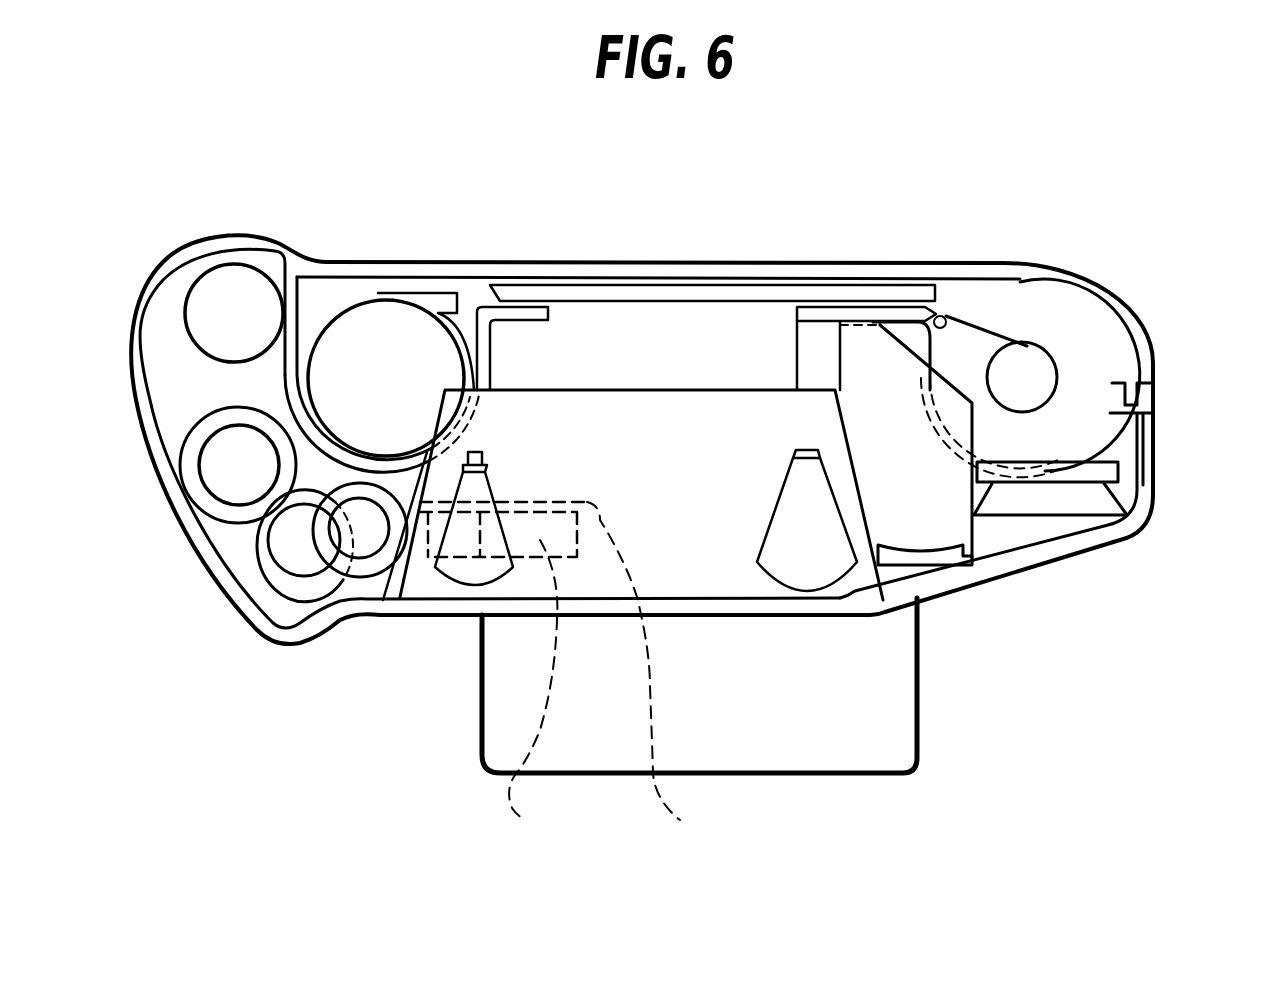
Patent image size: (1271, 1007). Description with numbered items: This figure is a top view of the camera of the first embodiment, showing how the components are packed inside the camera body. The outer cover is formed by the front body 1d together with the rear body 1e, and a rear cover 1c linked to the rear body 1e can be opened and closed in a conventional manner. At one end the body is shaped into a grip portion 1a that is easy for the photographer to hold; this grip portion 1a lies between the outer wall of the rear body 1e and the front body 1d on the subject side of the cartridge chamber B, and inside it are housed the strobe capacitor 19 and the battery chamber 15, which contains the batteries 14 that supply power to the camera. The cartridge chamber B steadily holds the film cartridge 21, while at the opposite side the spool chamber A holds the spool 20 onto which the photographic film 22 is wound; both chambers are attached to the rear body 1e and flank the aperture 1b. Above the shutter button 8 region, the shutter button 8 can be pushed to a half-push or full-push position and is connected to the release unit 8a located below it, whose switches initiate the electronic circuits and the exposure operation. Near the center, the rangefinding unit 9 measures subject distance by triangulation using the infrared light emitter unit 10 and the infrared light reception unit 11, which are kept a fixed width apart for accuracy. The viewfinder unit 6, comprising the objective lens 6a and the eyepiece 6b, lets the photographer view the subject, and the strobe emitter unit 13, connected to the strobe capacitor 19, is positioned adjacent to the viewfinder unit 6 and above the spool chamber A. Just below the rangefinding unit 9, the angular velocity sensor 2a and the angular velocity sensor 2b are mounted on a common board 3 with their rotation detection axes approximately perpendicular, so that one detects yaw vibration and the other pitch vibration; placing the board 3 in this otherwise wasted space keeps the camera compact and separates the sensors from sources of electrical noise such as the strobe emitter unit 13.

The grip portion 1a is at (257, 241).
The aperture 1b is at (710, 327).
The rear cover 1c is at (1093, 293).
The front body 1d is at (1117, 530).
The rear body 1e is at (513, 287).
The angular velocity sensor 2a is at (438, 524).
The angular velocity sensor 2b is at (537, 696).
The board 3 is at (699, 677).
The viewfinder unit 6 is at (822, 328).
The objective lens 6a is at (935, 560).
The eyepiece 6b is at (922, 300).
The shutter button 8 is at (365, 530).
The release unit 8a is at (302, 578).
The rangefinding unit 9 is at (646, 410).
The infrared light emitter unit 10 is at (818, 572).
The infrared light reception unit 11 is at (460, 568).
The strobe emitter unit 13 is at (1103, 472).
The batteries 14 is at (227, 472).
The battery chamber 15 is at (208, 556).
The strobe capacitor 19 is at (220, 300).
The spool 20 is at (1028, 392).
The film cartridge 21 is at (382, 312).
The photographic film 22 is at (982, 327).
The spool chamber A is at (1087, 360).
The cartridge chamber B is at (322, 287).